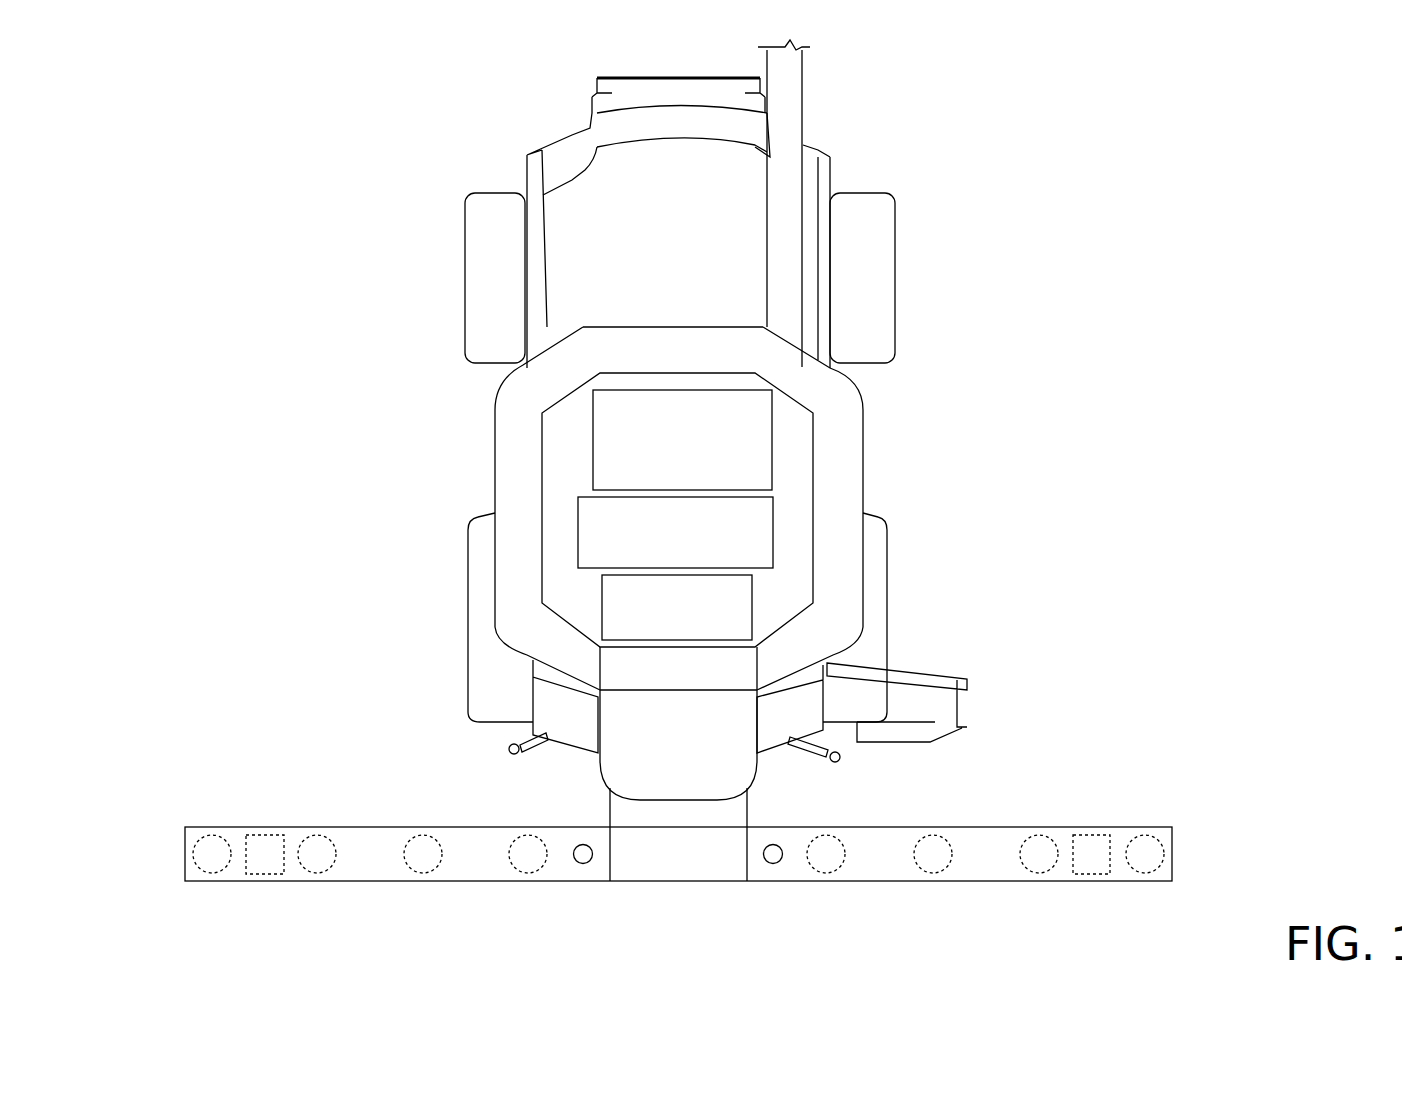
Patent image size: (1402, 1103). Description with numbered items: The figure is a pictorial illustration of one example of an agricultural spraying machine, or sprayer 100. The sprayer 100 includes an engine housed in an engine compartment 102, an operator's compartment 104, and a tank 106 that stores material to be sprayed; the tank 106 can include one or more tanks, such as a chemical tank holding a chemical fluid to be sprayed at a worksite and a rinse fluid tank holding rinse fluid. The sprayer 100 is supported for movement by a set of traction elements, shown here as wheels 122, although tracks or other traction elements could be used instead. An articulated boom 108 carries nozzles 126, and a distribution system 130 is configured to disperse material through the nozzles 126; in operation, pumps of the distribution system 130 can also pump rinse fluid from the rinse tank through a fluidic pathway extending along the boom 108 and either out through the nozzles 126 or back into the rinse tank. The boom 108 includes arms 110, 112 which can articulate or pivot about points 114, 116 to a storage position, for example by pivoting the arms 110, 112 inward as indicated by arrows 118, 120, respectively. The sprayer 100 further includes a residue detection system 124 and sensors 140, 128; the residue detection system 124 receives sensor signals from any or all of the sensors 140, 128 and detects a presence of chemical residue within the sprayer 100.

The agricultural spraying machine 100 is at (400, 106).
The engine compartment 102 is at (668, 77).
The operator's compartment 104 is at (698, 209).
The tank 106 is at (701, 362).
The articulated boom 108 is at (740, 888).
The arm 110 is at (320, 836).
The arm 112 is at (966, 881).
The pivot point 114 is at (581, 845).
The pivot point 116 is at (775, 845).
The arrow 118 is at (255, 752).
The arrow 120 is at (1103, 751).
The wheels 122 is at (475, 193).
The residue detection system 124 is at (744, 482).
The nozzle 126 is at (196, 853).
The sensor 128 is at (265, 876).
The distribution system 130 is at (738, 559).
The sensor 140 is at (658, 633).